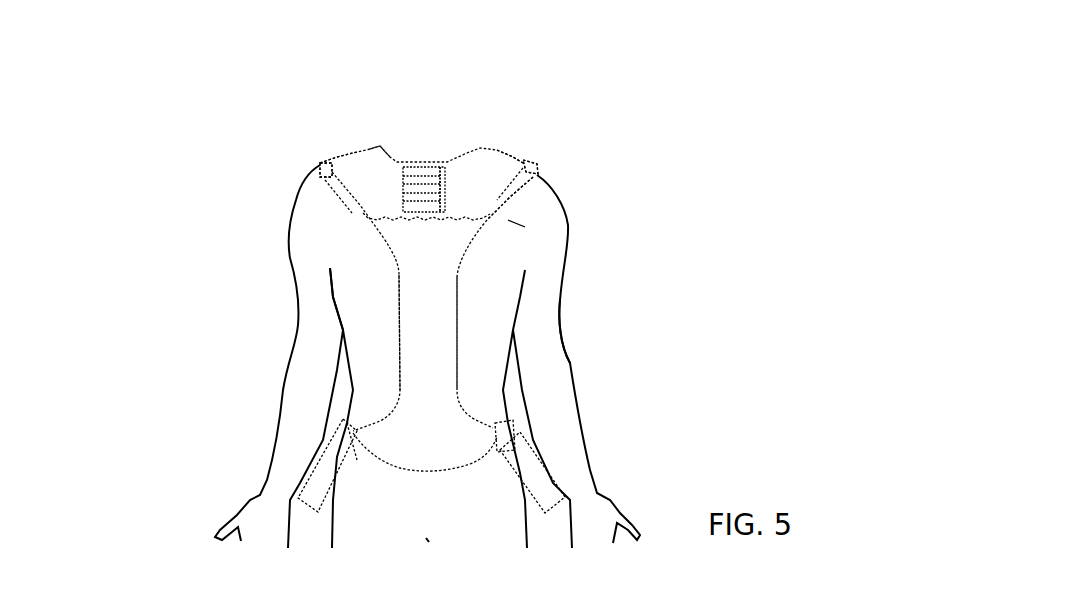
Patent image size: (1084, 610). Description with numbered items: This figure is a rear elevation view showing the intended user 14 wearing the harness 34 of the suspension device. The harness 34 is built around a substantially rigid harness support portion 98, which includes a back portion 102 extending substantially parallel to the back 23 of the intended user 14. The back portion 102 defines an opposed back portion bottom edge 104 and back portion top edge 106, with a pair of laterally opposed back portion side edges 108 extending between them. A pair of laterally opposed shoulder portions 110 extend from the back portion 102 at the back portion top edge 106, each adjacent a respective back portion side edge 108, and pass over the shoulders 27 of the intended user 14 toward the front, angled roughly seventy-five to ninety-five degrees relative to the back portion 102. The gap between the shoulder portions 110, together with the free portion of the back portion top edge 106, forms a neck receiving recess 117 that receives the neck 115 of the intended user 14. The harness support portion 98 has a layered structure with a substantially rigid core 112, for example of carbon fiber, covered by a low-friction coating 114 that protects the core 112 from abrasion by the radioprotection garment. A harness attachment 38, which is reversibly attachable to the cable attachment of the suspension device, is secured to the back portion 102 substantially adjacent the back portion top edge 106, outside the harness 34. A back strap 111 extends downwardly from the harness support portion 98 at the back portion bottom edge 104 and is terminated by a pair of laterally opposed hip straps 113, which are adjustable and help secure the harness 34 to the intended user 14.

The intended user 14 is at (632, 480).
The back 23 is at (373, 272).
The shoulders 27 is at (542, 195).
The harness 34 is at (497, 346).
The harness attachment 38 is at (414, 176).
The harness support portion 98 is at (523, 160).
The back portion 102 is at (480, 185).
The back portion bottom edge 104 is at (427, 237).
The back portion top edge 106 is at (560, 148).
The back portion side edges 108 is at (537, 175).
The shoulder portions 110 is at (320, 160).
The back strap 111 is at (418, 327).
The core 112 is at (540, 235).
The hip straps 113 is at (507, 433).
The coating 114 is at (397, 191).
The neck 115 is at (388, 147).
The neck receiving recess 117 is at (445, 160).